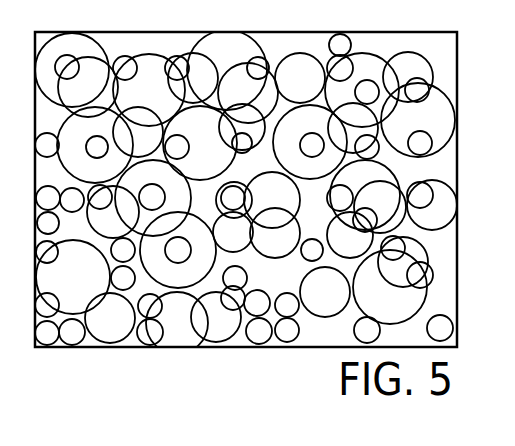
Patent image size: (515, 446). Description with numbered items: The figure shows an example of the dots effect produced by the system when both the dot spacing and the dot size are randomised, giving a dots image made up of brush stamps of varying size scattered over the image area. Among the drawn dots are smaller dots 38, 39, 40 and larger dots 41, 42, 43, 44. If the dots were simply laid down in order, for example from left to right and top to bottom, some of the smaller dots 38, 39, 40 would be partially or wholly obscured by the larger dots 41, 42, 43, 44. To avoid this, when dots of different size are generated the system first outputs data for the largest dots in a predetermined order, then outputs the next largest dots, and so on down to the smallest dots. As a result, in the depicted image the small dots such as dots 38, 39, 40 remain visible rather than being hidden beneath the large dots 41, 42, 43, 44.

The dot 38 is at (67, 67).
The dot 39 is at (195, 72).
The dot 40 is at (413, 90).
The dot 41 is at (68, 47).
The dot 42 is at (232, 43).
The dot 43 is at (420, 65).
The dot 44 is at (437, 105).